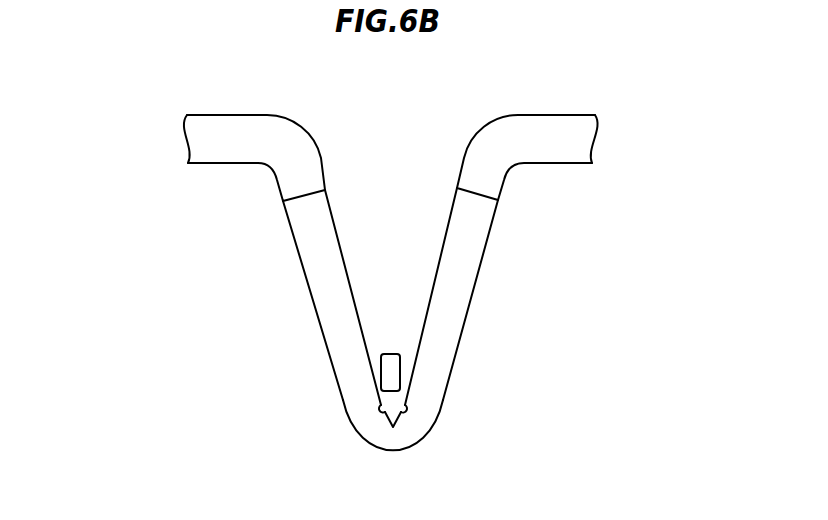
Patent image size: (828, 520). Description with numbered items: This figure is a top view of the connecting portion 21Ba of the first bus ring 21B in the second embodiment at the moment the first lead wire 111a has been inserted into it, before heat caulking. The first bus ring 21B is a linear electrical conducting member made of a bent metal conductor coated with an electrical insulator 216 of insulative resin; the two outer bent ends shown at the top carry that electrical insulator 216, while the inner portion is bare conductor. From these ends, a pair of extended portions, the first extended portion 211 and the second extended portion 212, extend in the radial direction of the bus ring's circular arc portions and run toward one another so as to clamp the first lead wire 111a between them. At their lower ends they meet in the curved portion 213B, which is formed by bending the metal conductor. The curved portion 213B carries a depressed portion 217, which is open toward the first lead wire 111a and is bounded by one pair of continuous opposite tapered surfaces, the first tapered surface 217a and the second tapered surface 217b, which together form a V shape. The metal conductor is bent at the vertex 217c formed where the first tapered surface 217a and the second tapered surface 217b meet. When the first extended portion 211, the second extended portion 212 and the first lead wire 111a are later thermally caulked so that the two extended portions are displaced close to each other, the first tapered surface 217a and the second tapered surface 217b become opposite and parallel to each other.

The first bus ring 21B is at (148, 83).
The connecting portion 21Ba is at (274, 320).
The electrical insulator 216 is at (557, 127).
The first extended portion 211 is at (315, 283).
The second extended portion 212 is at (468, 277).
The depressed portion 217 is at (391, 441).
The first tapered surface 217a is at (380, 408).
The second tapered surface 217b is at (404, 409).
The vertex 217c is at (393, 427).
The curved portion 213B is at (398, 438).
The first lead wire 111a is at (388, 354).